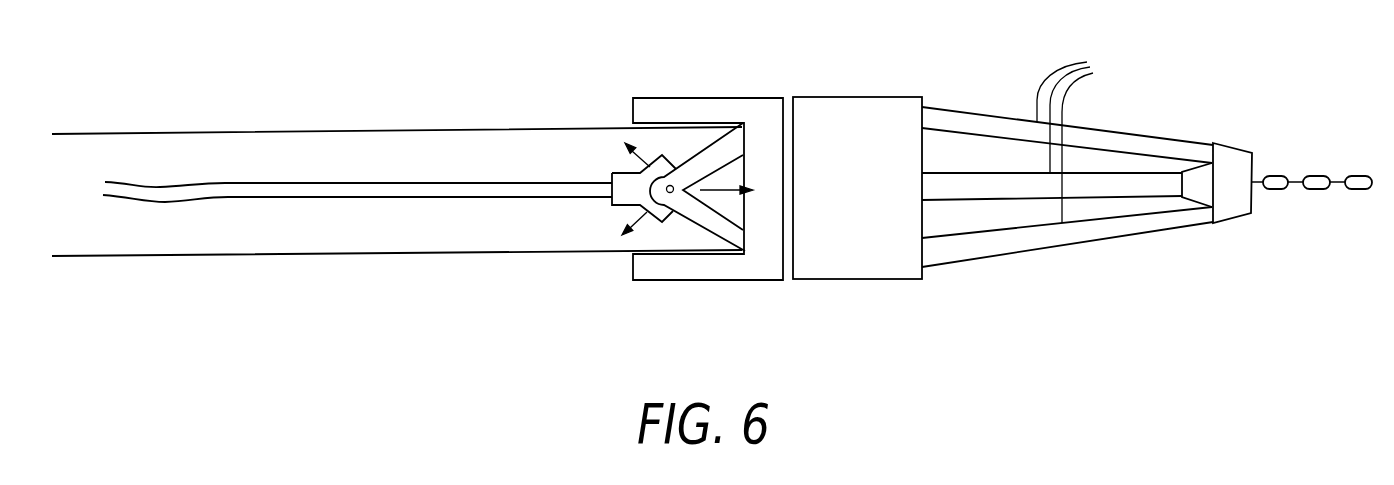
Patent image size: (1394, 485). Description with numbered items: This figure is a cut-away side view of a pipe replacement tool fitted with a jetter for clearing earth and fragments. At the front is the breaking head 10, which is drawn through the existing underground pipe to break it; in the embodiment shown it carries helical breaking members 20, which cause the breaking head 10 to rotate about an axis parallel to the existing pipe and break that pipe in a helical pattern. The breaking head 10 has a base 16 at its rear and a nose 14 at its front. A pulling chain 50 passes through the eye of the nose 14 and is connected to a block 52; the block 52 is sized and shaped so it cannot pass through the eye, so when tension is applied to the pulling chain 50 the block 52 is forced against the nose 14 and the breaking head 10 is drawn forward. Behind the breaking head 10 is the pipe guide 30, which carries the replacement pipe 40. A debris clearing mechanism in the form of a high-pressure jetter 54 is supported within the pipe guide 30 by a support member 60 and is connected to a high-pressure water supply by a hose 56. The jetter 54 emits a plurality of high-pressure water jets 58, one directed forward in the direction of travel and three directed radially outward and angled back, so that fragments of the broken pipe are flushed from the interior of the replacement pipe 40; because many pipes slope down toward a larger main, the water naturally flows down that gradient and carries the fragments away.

The breaking head 10 is at (925, 103).
The nose 14 is at (1238, 218).
The base 16 is at (863, 279).
The helical breaking members 20 is at (1082, 136).
The pipe guide 30 is at (705, 98).
The replacement pipe 40 is at (283, 131).
The pulling chain 50 is at (1317, 171).
The block 52 is at (1200, 173).
The high-pressure jetter 54 is at (643, 190).
The hose 56 is at (430, 183).
The high-pressure water jets 58 is at (638, 158).
The support member 60 is at (692, 208).